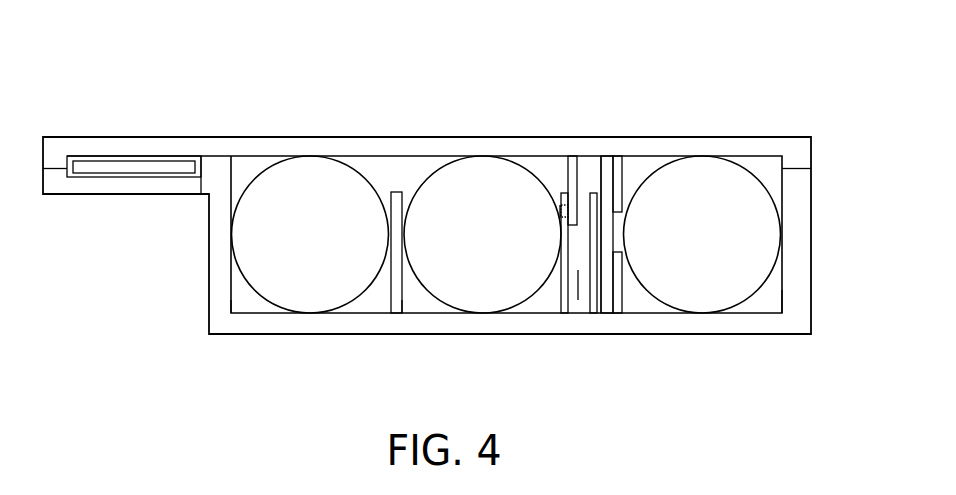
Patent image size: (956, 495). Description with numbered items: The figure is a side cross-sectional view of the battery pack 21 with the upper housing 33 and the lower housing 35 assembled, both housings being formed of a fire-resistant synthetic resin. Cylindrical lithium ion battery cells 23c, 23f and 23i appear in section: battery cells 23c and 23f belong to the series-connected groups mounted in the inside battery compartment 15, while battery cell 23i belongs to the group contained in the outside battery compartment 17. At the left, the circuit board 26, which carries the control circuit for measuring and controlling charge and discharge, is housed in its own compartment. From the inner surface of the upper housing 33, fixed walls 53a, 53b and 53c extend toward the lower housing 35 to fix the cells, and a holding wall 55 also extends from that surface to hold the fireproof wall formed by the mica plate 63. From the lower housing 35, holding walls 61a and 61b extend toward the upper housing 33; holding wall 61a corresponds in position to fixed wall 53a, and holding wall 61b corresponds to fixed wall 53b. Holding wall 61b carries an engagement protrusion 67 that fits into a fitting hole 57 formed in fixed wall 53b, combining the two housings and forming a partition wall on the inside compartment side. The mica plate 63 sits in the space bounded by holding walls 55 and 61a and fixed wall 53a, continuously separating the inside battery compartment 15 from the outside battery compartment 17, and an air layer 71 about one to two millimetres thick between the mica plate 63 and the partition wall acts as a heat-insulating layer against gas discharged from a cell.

The battery pack 21 is at (382, 92).
The lower housing 35 is at (760, 140).
The upper housing 33 is at (710, 335).
The circuit board 26 is at (125, 174).
The battery cell 23c is at (325, 249).
The battery cell 23f is at (458, 249).
The battery cell 23i is at (689, 249).
The fixed wall 53c is at (393, 298).
The fixed wall 53b is at (563, 304).
The fixed wall 53a is at (618, 304).
The holding wall 61b is at (574, 160).
The holding wall 61a is at (617, 167).
The mica plate 63 is at (608, 160).
The engagement protrusion 67 is at (560, 202).
The fitting hole 57 is at (560, 213).
The holding wall 55 is at (592, 304).
The air layer 71 is at (582, 283).
The inside battery compartment 15 is at (245, 301).
The outside battery compartment 17 is at (768, 301).